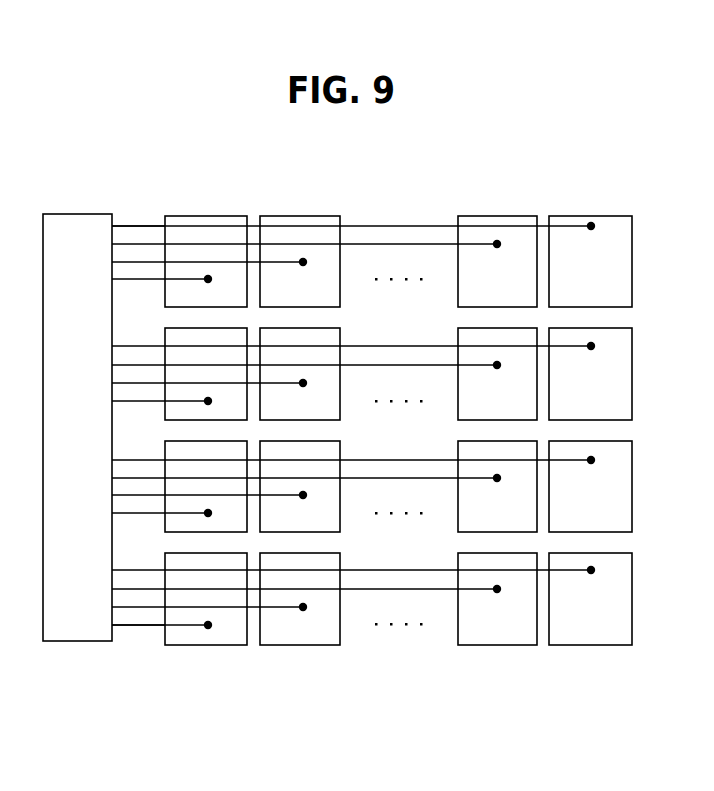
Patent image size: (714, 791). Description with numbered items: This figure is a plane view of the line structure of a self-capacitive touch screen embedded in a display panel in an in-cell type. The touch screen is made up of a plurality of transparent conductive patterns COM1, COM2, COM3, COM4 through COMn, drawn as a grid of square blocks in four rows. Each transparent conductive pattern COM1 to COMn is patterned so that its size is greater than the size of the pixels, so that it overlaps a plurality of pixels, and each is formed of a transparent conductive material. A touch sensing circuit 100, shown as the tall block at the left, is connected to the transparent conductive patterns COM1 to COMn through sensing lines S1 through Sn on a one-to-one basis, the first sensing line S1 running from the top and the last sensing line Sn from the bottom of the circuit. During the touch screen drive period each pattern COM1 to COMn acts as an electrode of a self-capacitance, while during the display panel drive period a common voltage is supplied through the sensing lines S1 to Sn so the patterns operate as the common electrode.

The touch sensing circuit 100 is at (92, 433).
The sensing line S1 is at (138, 223).
The sensing line Sn is at (137, 627).
The transparent conductive pattern COM1 is at (206, 430).
The transparent conductive pattern COM2 is at (300, 430).
The transparent conductive pattern COM3 is at (497, 430).
The transparent conductive pattern COM4 is at (590, 374).
The transparent conductive pattern COMn is at (590, 599).